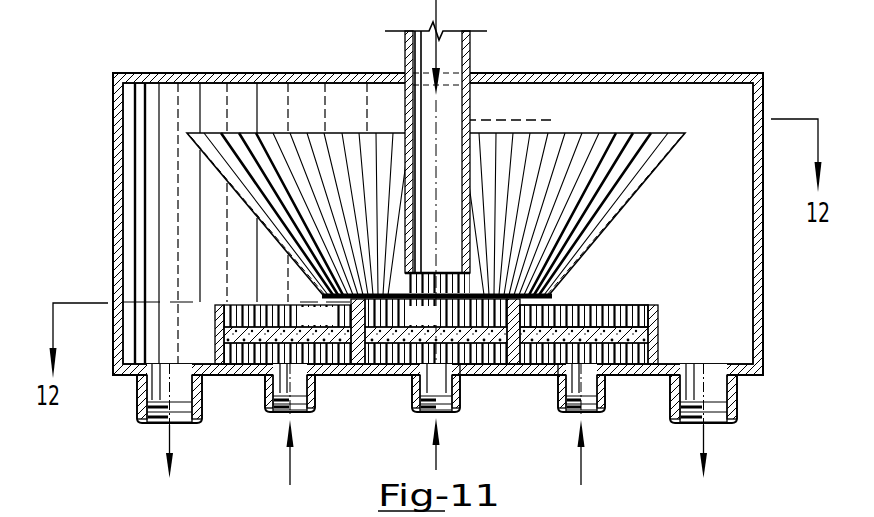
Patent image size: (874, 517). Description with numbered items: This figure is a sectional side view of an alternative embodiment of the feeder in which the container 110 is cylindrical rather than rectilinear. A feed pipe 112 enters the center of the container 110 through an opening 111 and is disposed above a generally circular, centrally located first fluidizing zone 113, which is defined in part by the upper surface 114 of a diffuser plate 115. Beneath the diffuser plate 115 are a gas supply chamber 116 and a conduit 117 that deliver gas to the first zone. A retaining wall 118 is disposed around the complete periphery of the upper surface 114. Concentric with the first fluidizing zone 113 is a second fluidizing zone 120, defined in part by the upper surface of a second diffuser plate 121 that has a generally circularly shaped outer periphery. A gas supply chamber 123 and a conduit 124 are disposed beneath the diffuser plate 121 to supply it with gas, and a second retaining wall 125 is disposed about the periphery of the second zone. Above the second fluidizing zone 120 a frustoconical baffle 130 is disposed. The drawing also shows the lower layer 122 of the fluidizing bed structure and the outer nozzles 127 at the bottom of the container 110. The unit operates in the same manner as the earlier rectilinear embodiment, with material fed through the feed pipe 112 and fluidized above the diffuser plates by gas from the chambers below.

The container 110 is at (763, 268).
The opening 111 is at (472, 72).
The feed pipe 112 is at (473, 192).
The first fluidizing zone 113 is at (436, 313).
The upper surface 114 is at (392, 299).
The diffuser plate 115 is at (400, 345).
The gas supply chamber 116 is at (500, 366).
The conduit 117 is at (462, 405).
The retaining wall 118 is at (383, 292).
The second fluidizing zone 120 is at (622, 280).
The diffuser plate 121 is at (250, 333).
The lower filter layer 122 is at (245, 345).
The gas supply chamber 123 is at (318, 352).
The conduit 124 is at (316, 408).
The second retaining wall 125 is at (220, 306).
The outer outlet nozzle 127 is at (140, 405).
The frustoconical baffle 130 is at (612, 200).